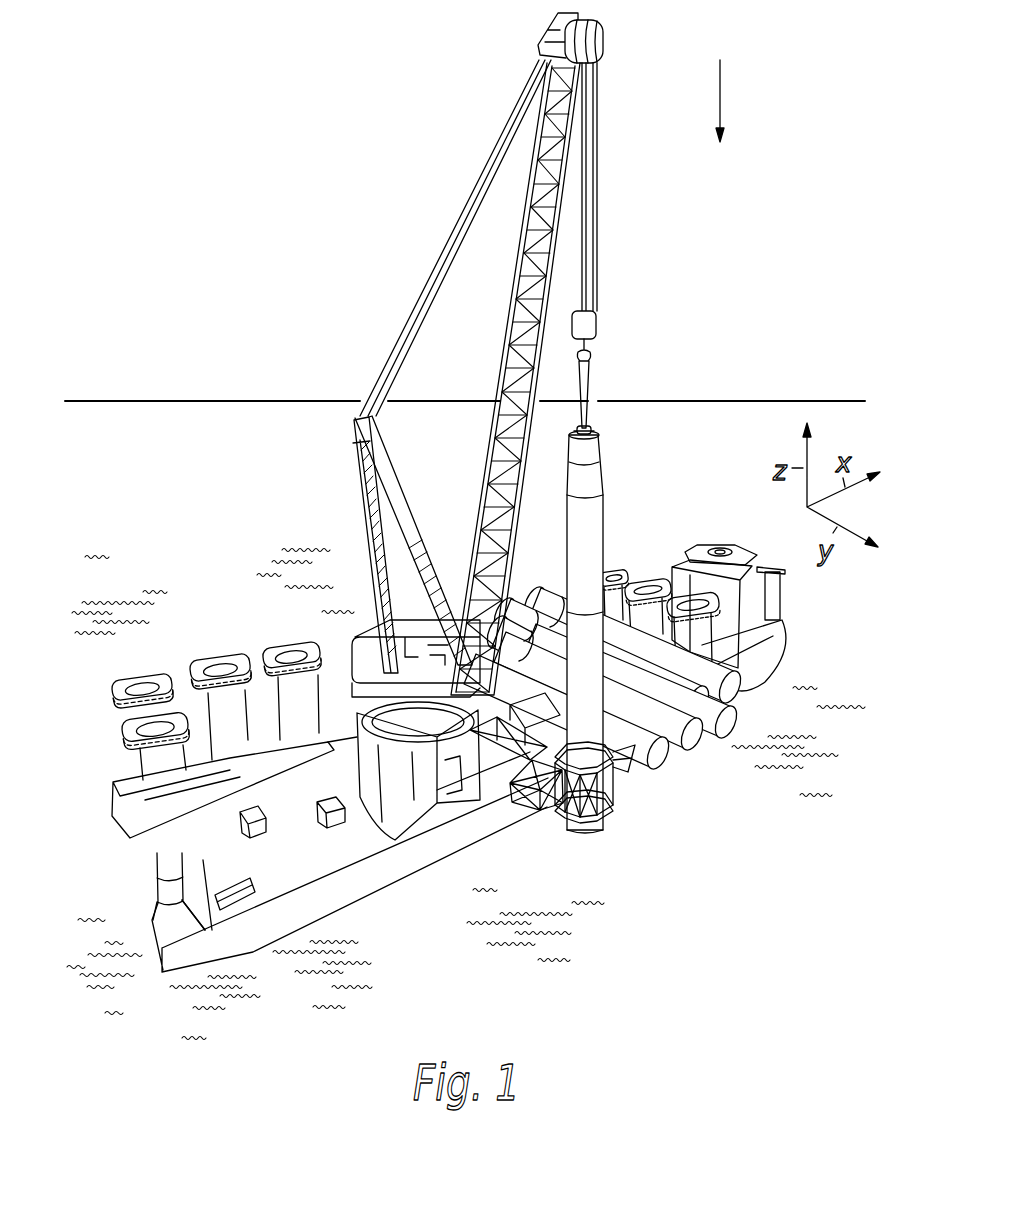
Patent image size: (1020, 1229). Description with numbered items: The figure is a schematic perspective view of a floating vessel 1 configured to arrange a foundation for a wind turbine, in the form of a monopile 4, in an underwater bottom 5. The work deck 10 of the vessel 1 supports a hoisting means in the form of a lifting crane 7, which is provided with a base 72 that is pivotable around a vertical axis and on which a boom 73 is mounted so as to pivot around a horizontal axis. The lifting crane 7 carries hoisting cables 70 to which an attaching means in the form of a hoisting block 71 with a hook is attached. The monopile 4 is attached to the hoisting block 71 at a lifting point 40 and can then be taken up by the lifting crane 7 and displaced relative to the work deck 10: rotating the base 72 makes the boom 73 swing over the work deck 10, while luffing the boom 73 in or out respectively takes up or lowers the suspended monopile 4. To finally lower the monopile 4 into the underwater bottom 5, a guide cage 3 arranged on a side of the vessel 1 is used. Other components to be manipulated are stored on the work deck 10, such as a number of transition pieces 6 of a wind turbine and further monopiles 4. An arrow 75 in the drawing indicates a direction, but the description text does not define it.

The vessel 1 is at (222, 616).
The guide cage 3 is at (618, 812).
The monopile 4 is at (603, 532).
The underwater bottom 5 is at (710, 935).
The transition pieces 6 is at (146, 763).
The lifting crane 7 is at (355, 489).
The work deck 10 is at (325, 857).
The lifting point 40 is at (594, 430).
The hoisting cables 70 is at (600, 218).
The hoisting block 71 is at (592, 328).
The base 72 is at (455, 762).
The boom 73 is at (521, 353).
The vertical direction arrow 75 is at (722, 100).